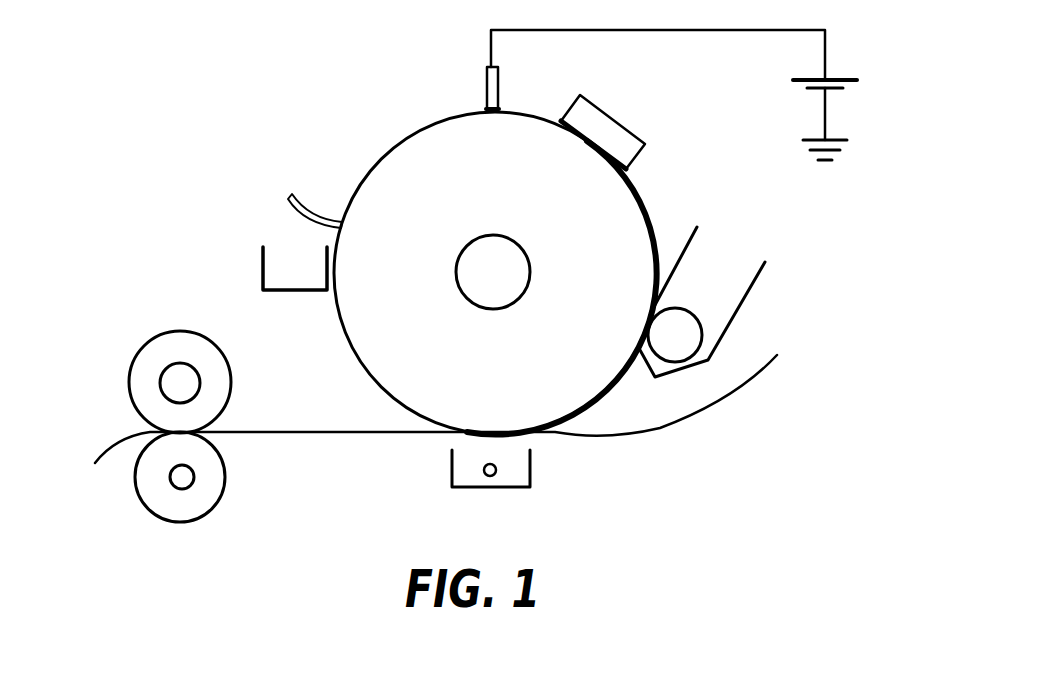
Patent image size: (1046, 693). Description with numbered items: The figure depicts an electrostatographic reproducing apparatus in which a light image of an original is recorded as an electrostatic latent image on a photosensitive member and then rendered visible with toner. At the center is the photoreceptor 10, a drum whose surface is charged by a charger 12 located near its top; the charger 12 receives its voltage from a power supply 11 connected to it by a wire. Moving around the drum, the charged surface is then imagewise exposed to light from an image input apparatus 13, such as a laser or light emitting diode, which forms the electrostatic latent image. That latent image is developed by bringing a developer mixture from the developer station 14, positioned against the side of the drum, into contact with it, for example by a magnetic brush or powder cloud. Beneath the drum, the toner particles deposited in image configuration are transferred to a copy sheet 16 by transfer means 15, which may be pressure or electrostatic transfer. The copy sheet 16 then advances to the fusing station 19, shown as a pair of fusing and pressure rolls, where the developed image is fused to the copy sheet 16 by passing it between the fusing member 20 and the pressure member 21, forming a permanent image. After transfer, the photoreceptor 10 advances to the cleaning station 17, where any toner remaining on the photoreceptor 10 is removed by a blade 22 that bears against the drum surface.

The photoreceptor 10 is at (642, 210).
The power supply 11 is at (826, 57).
The charger 12 is at (492, 93).
The image input apparatus 13 is at (620, 132).
The developer station 14 is at (718, 268).
The transfer means 15 is at (530, 482).
The copy sheet 16 is at (730, 390).
The cleaning station 17 is at (274, 213).
The fusing station 19 is at (105, 386).
The fusing member 20 is at (225, 368).
The pressure member 21 is at (217, 485).
The blade 22 is at (307, 212).